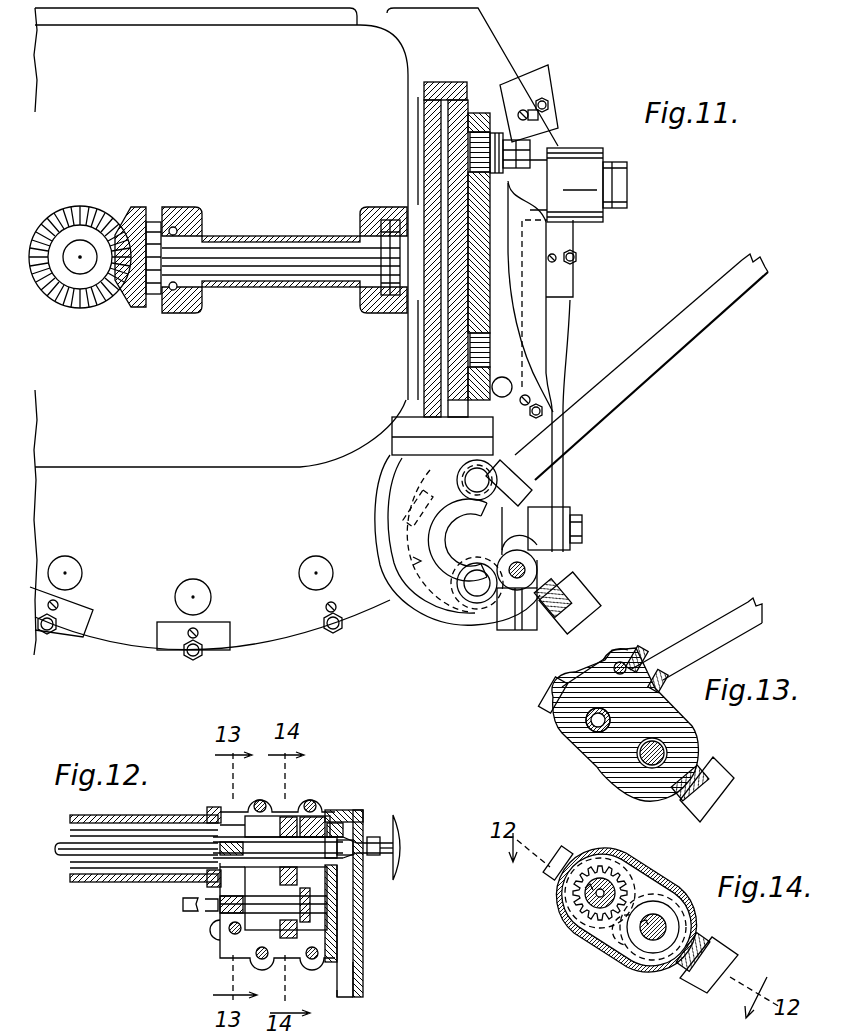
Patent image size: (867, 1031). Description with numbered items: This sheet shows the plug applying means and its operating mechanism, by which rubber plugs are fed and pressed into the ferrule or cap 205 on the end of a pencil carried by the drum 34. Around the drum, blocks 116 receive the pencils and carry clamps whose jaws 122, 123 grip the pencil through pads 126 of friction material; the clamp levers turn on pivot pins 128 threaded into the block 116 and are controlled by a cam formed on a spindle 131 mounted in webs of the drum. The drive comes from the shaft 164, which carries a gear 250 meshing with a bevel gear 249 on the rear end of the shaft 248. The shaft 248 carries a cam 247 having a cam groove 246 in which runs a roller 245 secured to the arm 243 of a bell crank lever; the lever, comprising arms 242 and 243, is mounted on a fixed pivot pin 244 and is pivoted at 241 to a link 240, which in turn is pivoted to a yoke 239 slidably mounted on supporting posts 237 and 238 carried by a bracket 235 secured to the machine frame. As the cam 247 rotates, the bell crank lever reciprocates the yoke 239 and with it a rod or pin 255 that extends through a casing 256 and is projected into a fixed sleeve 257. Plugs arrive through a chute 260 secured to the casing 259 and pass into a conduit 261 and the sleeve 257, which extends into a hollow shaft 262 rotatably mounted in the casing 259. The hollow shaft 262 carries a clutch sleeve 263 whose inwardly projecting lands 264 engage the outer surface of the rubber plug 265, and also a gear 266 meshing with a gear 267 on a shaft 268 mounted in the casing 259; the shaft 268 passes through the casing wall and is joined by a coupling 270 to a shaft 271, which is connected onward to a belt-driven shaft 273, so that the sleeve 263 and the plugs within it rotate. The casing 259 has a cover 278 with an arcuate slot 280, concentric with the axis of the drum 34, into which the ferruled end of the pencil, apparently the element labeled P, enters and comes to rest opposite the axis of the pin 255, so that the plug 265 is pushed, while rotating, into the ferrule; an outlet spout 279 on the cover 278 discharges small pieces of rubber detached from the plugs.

In FIG. 11, the drum 34 is at (585, 316).
In FIG. 12, the drum 34 is at (400, 842).
In FIG. 11, the block 116 is at (522, 90).
In FIG. 11, the jaw 122 is at (548, 103).
In FIG. 11, the jaw 123 is at (560, 115).
In FIG. 11, the pad 126 is at (548, 258).
In FIG. 11, the pivot pin 128 is at (525, 113).
In FIG. 11, the spindle 131 is at (492, 387).
In FIG. 11, the shaft 164 is at (84, 252).
In FIG. 12, the ferrule or cap 205 is at (387, 867).
In FIG. 11, the bracket 235 is at (403, 527).
In FIG. 11, the supporting post 237 is at (473, 480).
In FIG. 11, the supporting post 238 is at (477, 590).
In FIG. 11, the yoke 239 is at (477, 538).
In FIG. 11, the link 240 is at (555, 505).
In FIG. 11, the pivot 241 is at (584, 523).
In FIG. 11, the arm 242 is at (533, 350).
In FIG. 11, the arm 243 is at (556, 118).
In FIG. 11, the fixed pivot pin 244 is at (628, 182).
In FIG. 11, the roller 245 is at (484, 122).
In FIG. 11, the cam groove 246 is at (447, 137).
In FIG. 11, the cam 247 is at (490, 283).
In FIG. 11, the shaft 248 is at (300, 258).
In FIG. 11, the bevel gear 249 is at (138, 300).
In FIG. 11, the gear 250 is at (90, 308).
In FIG. 12, the reciprocatable rod or pin 255 is at (107, 845).
In FIG. 12, the casing 256 is at (110, 887).
In FIG. 12, the sleeve 257 is at (233, 840).
In FIG. 13, the sleeve 257 is at (590, 727).
In FIG. 11, the casing 259 is at (413, 557).
In FIG. 12, the casing 259 is at (227, 940).
In FIG. 13, the casing 259 is at (683, 723).
In FIG. 14, the casing 259 is at (663, 872).
In FIG. 11, the chute 260 is at (732, 278).
In FIG. 13, the chute 260 is at (727, 590).
In FIG. 13, the conduit 261 is at (613, 693).
In FIG. 12, the hollow shaft or sleeve 262 is at (303, 833).
In FIG. 14, the hollow shaft or sleeve 262 is at (583, 900).
In FIG. 12, the sleeve 263 is at (327, 843).
In FIG. 12, the lands 264 is at (343, 847).
In FIG. 12, the rubber plug 265 is at (213, 860).
In FIG. 12, the gear 266 is at (292, 820).
In FIG. 14, the gear 266 is at (593, 920).
In FIG. 12, the gear 267 is at (290, 937).
In FIG. 14, the gear 267 is at (627, 933).
In FIG. 12, the shaft 268 is at (313, 907).
In FIG. 13, the shaft 268 is at (667, 753).
In FIG. 14, the shaft 268 is at (670, 927).
In FIG. 12, the coupling 270 is at (203, 912).
In FIG. 12, the shaft 271 is at (190, 904).
In FIG. 11, the shaft 273 is at (525, 570).
In FIG. 11, the cover 278 is at (542, 625).
In FIG. 12, the cover 278 is at (363, 933).
In FIG. 13, the cover 278 is at (680, 803).
In FIG. 14, the cover 278 is at (677, 970).
In FIG. 11, the outlet spout 279 is at (595, 607).
In FIG. 12, the outlet spout 279 is at (350, 997).
In FIG. 13, the outlet spout 279 is at (727, 790).
In FIG. 14, the outlet spout 279 is at (737, 953).
In FIG. 12, the arcuate slot 280 is at (380, 845).
In FIG. 11, the pointer P is at (193, 660).
In FIG. 12, the pointer P is at (387, 853).